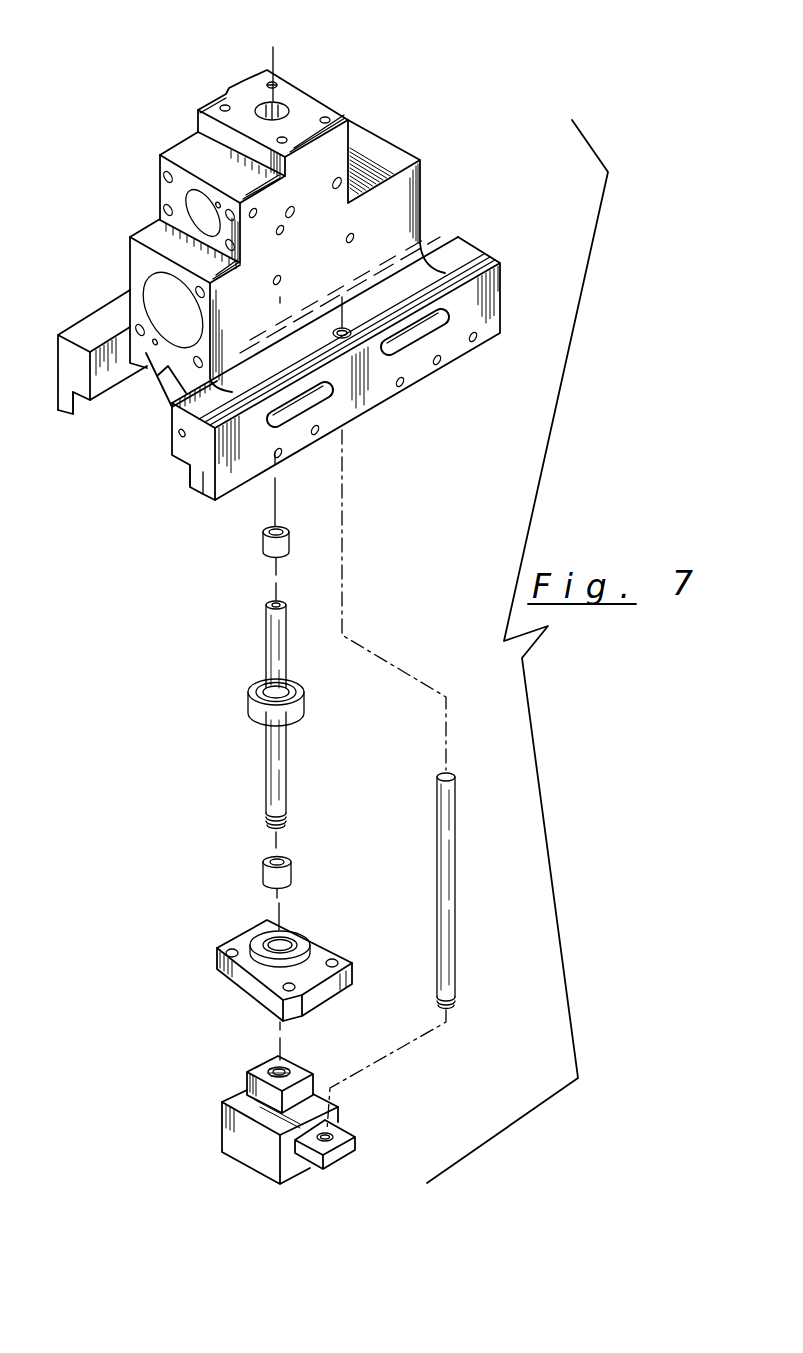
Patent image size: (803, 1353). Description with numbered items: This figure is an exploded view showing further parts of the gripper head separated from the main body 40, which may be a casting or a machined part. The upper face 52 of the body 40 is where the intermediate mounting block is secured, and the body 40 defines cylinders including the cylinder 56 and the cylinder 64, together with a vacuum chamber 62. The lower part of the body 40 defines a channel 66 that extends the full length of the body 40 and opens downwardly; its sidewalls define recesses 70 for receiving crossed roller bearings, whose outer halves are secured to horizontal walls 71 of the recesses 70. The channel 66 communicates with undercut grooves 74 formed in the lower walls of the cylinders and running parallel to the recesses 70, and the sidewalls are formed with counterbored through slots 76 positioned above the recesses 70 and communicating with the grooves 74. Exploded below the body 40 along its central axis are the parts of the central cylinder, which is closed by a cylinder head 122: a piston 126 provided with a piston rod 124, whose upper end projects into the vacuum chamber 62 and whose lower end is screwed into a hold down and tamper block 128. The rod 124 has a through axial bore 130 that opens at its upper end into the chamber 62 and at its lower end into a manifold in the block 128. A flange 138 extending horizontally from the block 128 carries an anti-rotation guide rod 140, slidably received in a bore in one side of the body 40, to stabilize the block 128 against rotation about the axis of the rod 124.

The main body 40 is at (264, 291).
The upper face 52 is at (306, 109).
The vacuum chamber 62 is at (286, 109).
The cylinder 64 is at (200, 204).
The cylinder 56 is at (165, 304).
The undercut grooves 74 is at (162, 372).
The channel 66 is at (173, 430).
The recesses 70 is at (182, 470).
The horizontal walls 71 is at (78, 414).
The through slots 76 is at (310, 403).
The axial bore 130 is at (276, 602).
The piston 126 is at (303, 709).
The piston rod 124 is at (310, 691).
The anti-rotation guide rod 140 is at (455, 867).
The cylinder head 122 is at (354, 981).
The hold down and tamper block 128 is at (235, 1138).
The flange 138 is at (340, 1133).